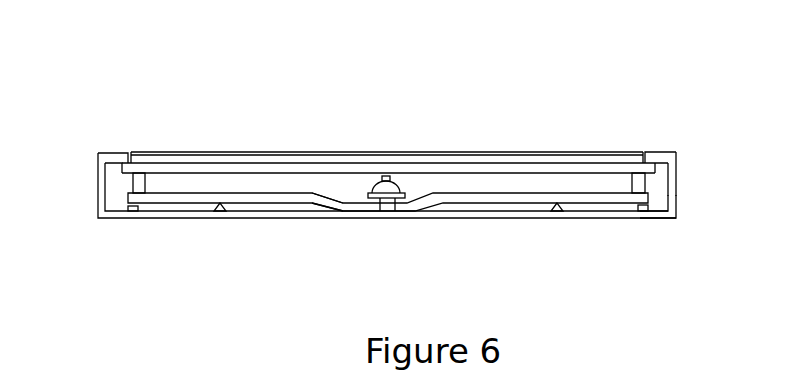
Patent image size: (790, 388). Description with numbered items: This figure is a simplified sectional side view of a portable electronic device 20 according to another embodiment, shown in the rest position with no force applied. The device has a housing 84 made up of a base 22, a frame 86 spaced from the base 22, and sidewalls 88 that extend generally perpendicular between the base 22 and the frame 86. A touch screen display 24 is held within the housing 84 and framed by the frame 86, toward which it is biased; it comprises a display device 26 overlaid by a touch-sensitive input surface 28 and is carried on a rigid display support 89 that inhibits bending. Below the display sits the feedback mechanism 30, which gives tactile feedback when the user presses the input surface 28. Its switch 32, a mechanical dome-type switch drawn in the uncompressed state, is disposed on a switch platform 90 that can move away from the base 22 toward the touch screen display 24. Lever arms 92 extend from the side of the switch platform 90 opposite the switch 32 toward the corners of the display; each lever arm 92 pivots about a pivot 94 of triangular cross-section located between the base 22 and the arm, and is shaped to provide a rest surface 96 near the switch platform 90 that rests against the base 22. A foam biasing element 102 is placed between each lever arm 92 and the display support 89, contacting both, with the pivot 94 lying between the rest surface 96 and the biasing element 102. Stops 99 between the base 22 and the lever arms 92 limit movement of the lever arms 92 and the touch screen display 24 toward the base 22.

The portable electronic device 20 is at (584, 69).
The base 22 is at (567, 213).
The touch screen display 24 is at (166, 140).
The display device 26 is at (423, 160).
The touch-sensitive input surface 28 is at (497, 153).
The feedback mechanism 30 is at (157, 218).
The switch 32 is at (395, 196).
The housing 84 is at (674, 214).
The frame 86 is at (650, 151).
The sidewalls 88 is at (676, 173).
The display support 89 is at (230, 172).
The switch platform 90 is at (383, 200).
The lever arms 92 is at (487, 196).
The pivot 94 is at (222, 213).
The rest surface 96 is at (350, 210).
The stops 99 is at (132, 216).
The biasing element 102 is at (143, 181).